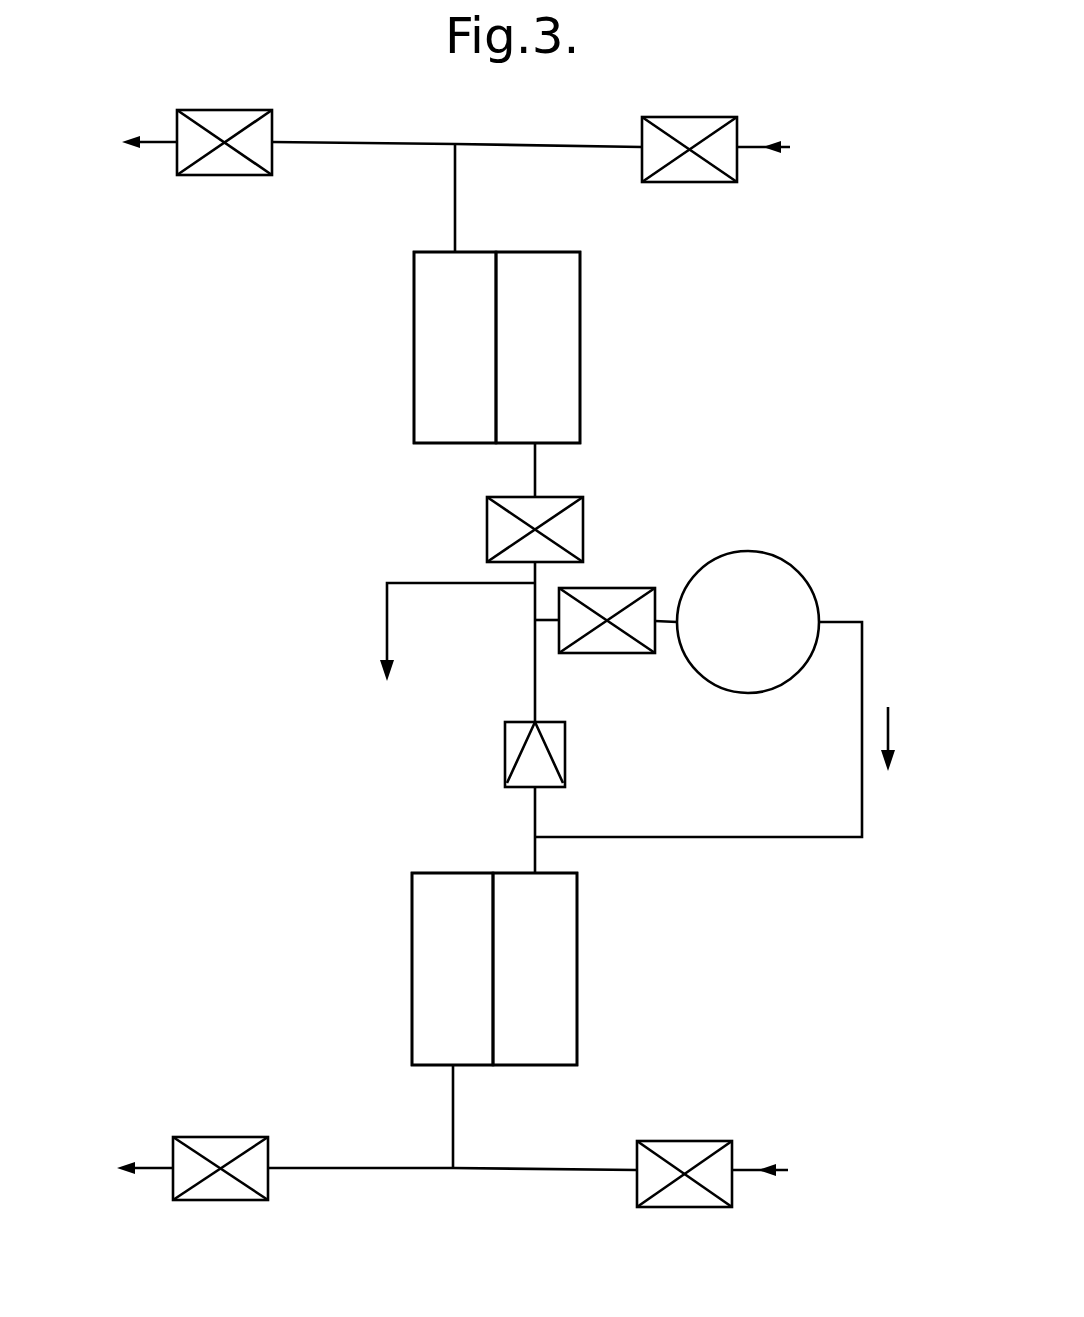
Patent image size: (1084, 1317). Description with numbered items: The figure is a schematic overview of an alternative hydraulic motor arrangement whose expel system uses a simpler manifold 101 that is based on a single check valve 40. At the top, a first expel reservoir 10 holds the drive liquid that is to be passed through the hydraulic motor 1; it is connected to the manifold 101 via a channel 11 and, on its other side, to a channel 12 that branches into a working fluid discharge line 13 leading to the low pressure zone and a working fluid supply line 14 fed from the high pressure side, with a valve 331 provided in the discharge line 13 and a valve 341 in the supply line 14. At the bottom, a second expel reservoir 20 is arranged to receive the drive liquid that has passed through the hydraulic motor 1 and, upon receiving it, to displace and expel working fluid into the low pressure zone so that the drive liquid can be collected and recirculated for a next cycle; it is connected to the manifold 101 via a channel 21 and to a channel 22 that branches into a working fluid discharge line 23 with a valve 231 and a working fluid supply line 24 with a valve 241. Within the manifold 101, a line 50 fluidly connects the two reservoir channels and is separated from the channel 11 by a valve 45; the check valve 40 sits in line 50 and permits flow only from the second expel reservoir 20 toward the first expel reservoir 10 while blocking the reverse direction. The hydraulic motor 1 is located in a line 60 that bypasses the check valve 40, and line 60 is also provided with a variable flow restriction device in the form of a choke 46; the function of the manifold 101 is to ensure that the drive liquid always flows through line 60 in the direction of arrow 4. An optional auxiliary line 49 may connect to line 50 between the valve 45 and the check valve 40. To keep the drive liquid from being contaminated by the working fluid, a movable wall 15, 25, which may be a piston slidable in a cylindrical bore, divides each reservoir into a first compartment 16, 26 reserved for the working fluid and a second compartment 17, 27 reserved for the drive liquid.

The manifold 101 is at (832, 538).
The hydraulic motor 1 is at (757, 633).
The arrow 4 is at (888, 733).
The first expel reservoir 10 is at (501, 347).
The channel 11 is at (535, 470).
The channel 12 is at (455, 210).
The working fluid discharge line 13 is at (372, 142).
The working fluid supply line 14 is at (552, 147).
The movable wall 15 is at (496, 378).
The first compartment 16 is at (469, 306).
The second compartment 17 is at (550, 306).
The second expel reservoir 20 is at (497, 969).
The channel 21 is at (535, 856).
The channel 22 is at (453, 1108).
The working fluid discharge line 23 is at (362, 1168).
The working fluid supply line 24 is at (560, 1168).
The movable wall 25 is at (493, 1005).
The first compartment 26 is at (472, 929).
The second compartment 27 is at (549, 929).
The check valve 40 is at (525, 752).
The valve 45 is at (487, 520).
The choke 46 is at (615, 642).
The auxiliary line 49 is at (445, 583).
The line 50 is at (535, 677).
The line 60 is at (755, 837).
The valve 231 is at (230, 1137).
The valve 241 is at (695, 1141).
The valve 331 is at (229, 175).
The valve 341 is at (683, 182).